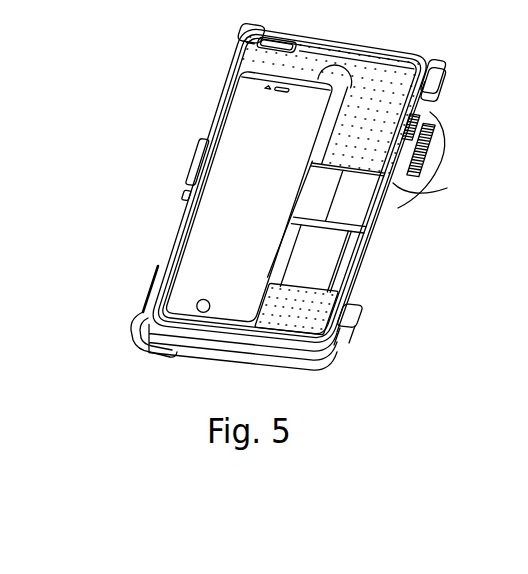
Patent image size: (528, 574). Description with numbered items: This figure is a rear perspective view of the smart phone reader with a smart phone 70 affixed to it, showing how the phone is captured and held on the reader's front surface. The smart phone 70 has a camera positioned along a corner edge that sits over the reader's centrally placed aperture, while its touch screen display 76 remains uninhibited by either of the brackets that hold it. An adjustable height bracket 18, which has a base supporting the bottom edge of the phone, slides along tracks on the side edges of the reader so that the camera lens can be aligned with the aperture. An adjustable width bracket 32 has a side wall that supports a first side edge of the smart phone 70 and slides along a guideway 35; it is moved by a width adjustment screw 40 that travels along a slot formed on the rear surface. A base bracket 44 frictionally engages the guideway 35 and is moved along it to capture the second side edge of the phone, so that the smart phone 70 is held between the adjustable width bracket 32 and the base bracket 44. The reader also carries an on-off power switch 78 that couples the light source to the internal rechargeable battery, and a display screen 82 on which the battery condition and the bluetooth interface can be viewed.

The adjustable height bracket 18 is at (313, 302).
The adjustable width bracket 32 is at (194, 148).
The guideway 35 is at (375, 200).
The width adjustment screw 40 is at (362, 312).
The base bracket 44 is at (330, 178).
The smart phone 70 is at (147, 311).
The touch screen display 76 is at (178, 246).
The on-off power switch 78 is at (428, 112).
The display screen 82 is at (254, 46).